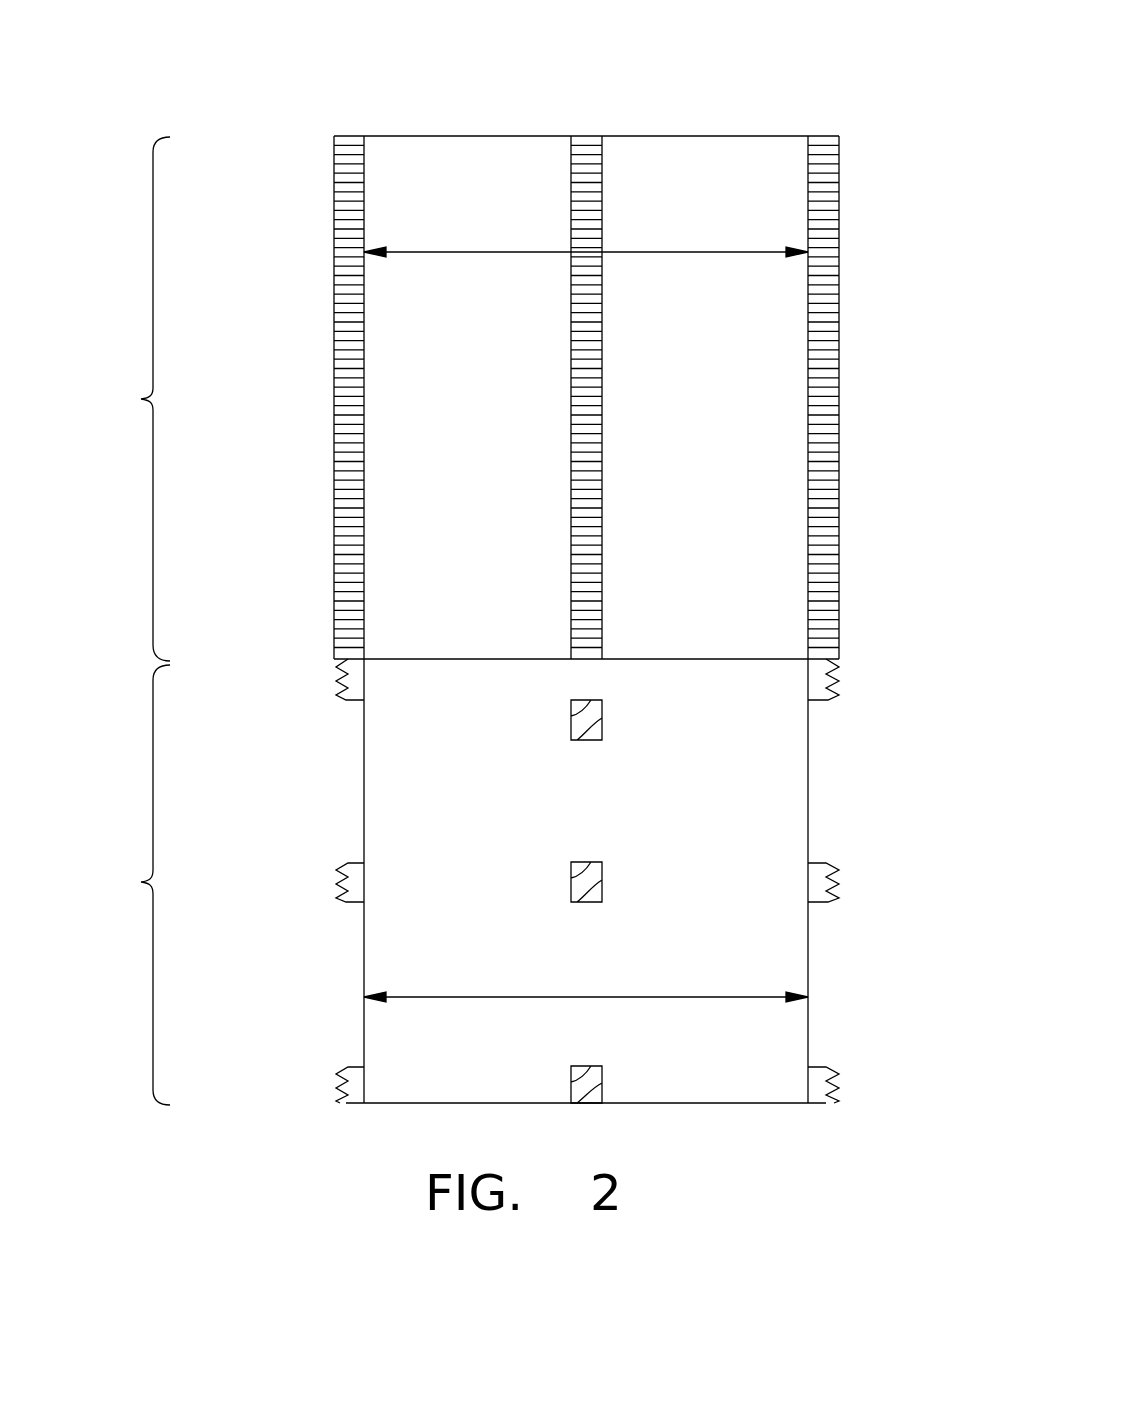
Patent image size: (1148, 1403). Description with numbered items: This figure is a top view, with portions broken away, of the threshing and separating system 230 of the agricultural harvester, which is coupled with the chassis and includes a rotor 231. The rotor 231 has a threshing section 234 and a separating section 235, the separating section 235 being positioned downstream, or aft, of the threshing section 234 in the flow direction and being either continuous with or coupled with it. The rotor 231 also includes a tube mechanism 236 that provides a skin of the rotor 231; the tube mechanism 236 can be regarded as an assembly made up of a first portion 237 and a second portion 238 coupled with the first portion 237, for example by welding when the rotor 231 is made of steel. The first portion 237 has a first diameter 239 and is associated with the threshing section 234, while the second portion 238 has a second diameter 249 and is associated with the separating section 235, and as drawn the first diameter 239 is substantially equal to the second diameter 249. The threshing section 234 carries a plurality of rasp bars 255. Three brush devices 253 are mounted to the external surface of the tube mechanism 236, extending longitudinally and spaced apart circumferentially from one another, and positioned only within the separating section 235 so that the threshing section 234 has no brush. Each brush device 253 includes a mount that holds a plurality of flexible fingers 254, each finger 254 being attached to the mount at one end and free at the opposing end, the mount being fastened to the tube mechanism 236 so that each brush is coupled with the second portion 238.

The threshing and separating system 230 is at (504, 567).
The rotor 231 is at (713, 130).
The threshing section 234 is at (107, 885).
The separating section 235 is at (107, 399).
The tube mechanism 236 is at (810, 800).
The first portion 237 is at (107, 885).
The second portion 238 is at (107, 399).
The first diameter 239 is at (470, 997).
The second diameter 249 is at (468, 252).
The brush device 253 is at (331, 516).
The flexible fingers 254 is at (579, 397).
The rasp bars 255 is at (603, 868).